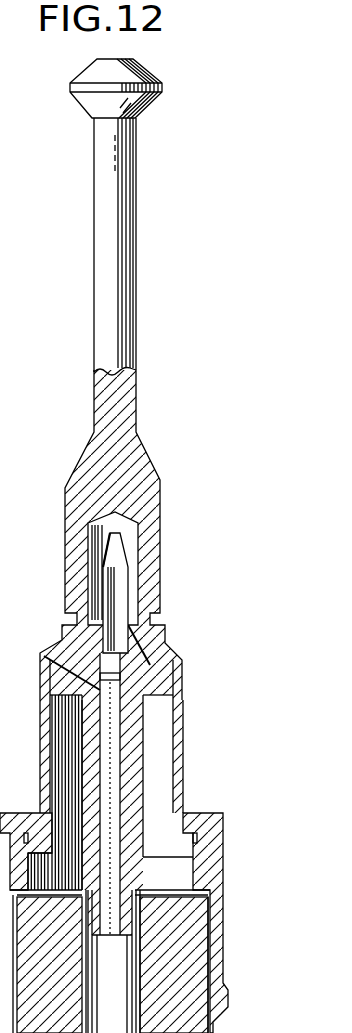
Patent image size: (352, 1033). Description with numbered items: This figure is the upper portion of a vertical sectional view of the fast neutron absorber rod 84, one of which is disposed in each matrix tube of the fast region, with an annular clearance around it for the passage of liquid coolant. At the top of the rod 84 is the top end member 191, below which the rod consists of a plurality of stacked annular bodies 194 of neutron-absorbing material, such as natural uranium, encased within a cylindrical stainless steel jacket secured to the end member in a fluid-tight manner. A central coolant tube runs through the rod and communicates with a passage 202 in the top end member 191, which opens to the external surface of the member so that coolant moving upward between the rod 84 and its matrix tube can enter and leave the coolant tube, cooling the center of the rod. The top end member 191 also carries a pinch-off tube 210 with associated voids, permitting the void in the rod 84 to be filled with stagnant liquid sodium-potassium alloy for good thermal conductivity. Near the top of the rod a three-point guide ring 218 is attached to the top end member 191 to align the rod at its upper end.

The fast rod 84 is at (190, 748).
The top end member 191 is at (170, 648).
The annular bodies 194 is at (193, 948).
The passage 202 is at (113, 808).
The pinch-off tube 210 is at (128, 578).
The three-point guide ring 218 is at (217, 872).